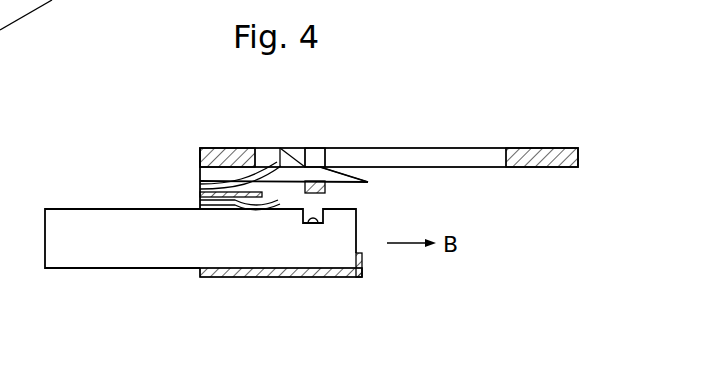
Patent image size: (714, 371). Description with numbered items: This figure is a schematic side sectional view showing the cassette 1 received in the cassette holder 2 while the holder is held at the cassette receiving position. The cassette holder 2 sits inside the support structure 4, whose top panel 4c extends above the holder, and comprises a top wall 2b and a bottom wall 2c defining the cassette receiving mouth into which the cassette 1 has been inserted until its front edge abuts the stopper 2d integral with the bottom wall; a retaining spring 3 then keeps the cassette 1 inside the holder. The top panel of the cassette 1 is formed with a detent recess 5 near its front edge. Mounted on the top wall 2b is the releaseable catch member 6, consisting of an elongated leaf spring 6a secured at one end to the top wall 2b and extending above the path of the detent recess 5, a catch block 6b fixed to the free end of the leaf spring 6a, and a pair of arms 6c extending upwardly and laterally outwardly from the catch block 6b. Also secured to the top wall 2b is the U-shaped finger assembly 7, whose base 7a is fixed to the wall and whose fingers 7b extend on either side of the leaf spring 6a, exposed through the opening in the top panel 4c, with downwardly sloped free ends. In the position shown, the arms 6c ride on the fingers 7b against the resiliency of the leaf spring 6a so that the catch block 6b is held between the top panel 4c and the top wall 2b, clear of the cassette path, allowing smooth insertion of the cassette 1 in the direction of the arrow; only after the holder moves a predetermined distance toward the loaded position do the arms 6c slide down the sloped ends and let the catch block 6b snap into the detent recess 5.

The cassette 1 is at (111, 252).
The cassette holder 2 is at (237, 277).
The top wall 2b is at (200, 192).
The bottom wall 2c is at (212, 279).
The stopper 2d is at (362, 262).
The retaining spring 3 is at (267, 212).
The support structure 4 is at (478, 149).
The top panel 4c is at (540, 148).
The detent recess 5 is at (318, 226).
The releaseable catch member 6 is at (298, 159).
The leaf spring 6a is at (231, 183).
The catch block 6b is at (328, 192).
The arms 6c is at (317, 157).
The finger assembly 7 is at (199, 170).
The base 7a is at (218, 173).
The fingers 7b is at (342, 174).